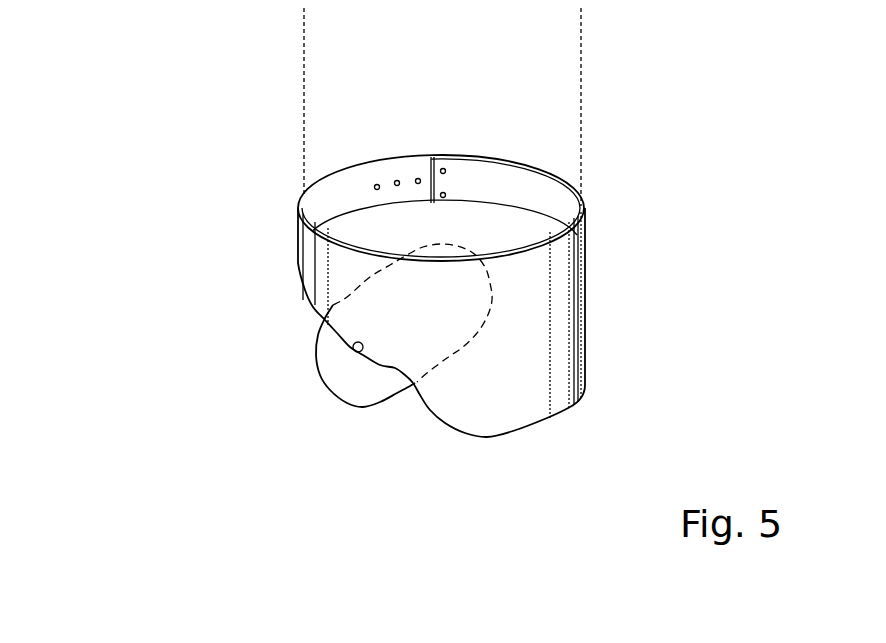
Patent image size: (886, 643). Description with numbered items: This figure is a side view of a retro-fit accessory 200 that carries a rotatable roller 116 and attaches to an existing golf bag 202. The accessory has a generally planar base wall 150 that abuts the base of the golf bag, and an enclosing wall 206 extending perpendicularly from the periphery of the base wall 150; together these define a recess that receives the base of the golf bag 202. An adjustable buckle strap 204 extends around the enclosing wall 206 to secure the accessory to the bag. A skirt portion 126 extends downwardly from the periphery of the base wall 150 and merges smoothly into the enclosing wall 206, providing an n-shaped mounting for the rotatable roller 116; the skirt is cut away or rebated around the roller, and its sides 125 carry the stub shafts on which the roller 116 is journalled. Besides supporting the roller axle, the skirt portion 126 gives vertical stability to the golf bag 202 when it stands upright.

The retro-fit accessory 200 is at (182, 137).
The existing golf bag 202 is at (303, 97).
The adjustable buckle strap 204 is at (338, 186).
The enclosing wall 206 is at (485, 172).
The base wall 150 is at (503, 228).
The skirt portion 126 is at (557, 334).
The sides 125 is at (380, 350).
The rotatable roller 116 is at (340, 383).